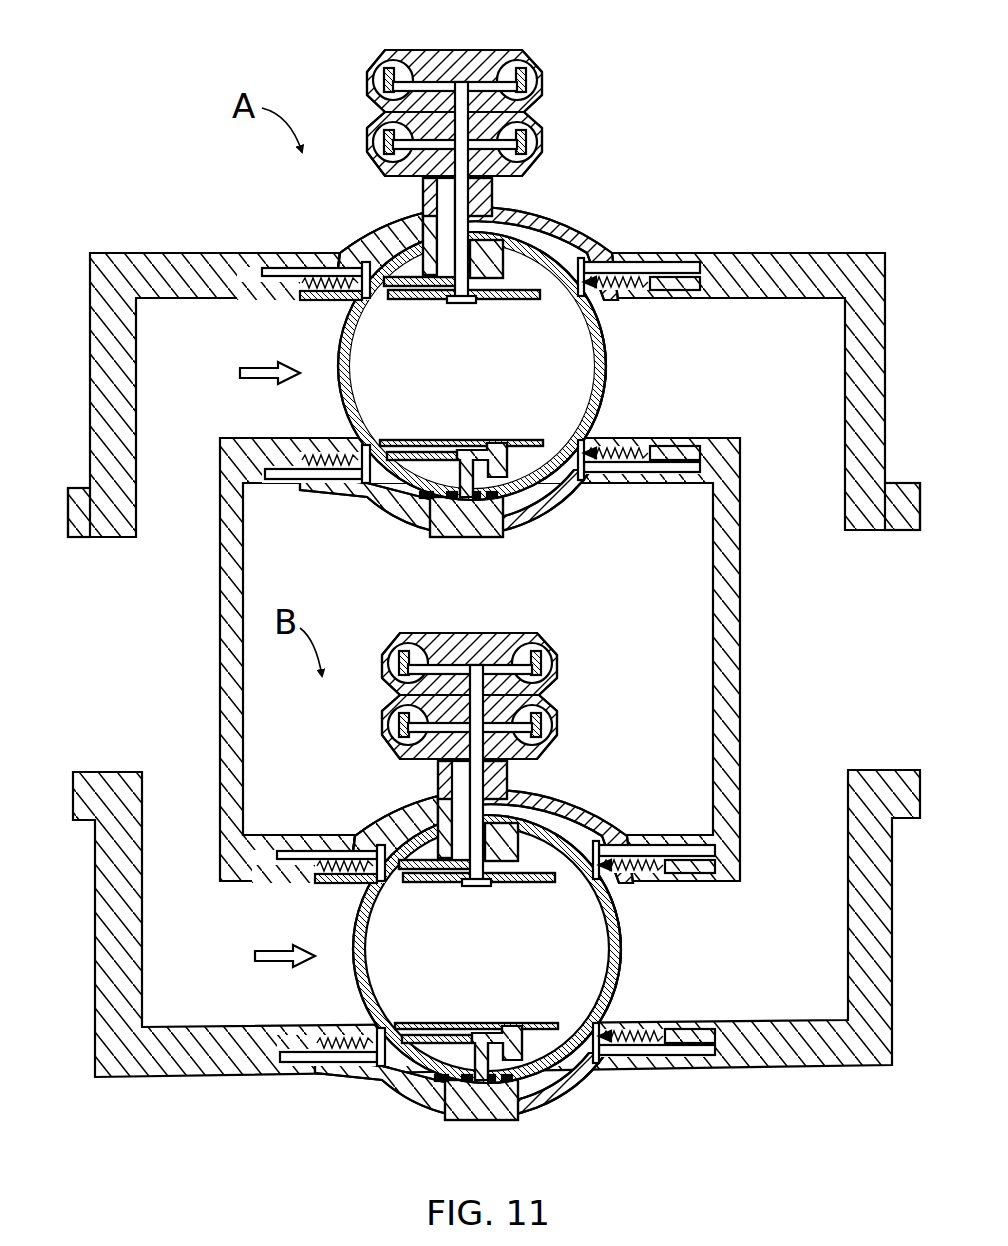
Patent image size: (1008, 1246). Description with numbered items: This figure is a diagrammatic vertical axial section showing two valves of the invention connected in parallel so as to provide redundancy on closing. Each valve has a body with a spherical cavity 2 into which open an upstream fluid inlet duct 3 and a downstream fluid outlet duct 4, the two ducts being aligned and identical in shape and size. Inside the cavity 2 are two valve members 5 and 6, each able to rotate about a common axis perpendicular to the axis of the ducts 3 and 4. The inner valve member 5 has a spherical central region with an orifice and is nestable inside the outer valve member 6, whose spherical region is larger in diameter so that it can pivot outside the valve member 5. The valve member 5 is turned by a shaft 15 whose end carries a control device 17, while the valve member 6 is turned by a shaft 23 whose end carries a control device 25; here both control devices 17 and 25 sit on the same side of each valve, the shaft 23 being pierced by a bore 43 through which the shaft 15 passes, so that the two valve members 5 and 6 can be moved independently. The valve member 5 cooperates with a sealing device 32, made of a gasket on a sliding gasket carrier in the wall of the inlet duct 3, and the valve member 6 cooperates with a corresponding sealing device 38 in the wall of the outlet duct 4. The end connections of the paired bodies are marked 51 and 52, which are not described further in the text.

The spherical cavity 2 is at (472, 352).
The upstream fluid inlet duct 3 is at (218, 352).
The downstream fluid outlet duct 4 is at (710, 352).
The valve member 5 is at (341, 388).
The valve member 6 is at (606, 388).
The shaft 15 is at (455, 108).
The control device 17 is at (530, 68).
The shaft 23 is at (425, 187).
The control device 25 is at (513, 143).
The sealing device 32 is at (300, 250).
The sealing device 38 is at (612, 250).
The bore 43 is at (473, 217).
The flange 51 is at (100, 538).
The flange 52 is at (888, 531).